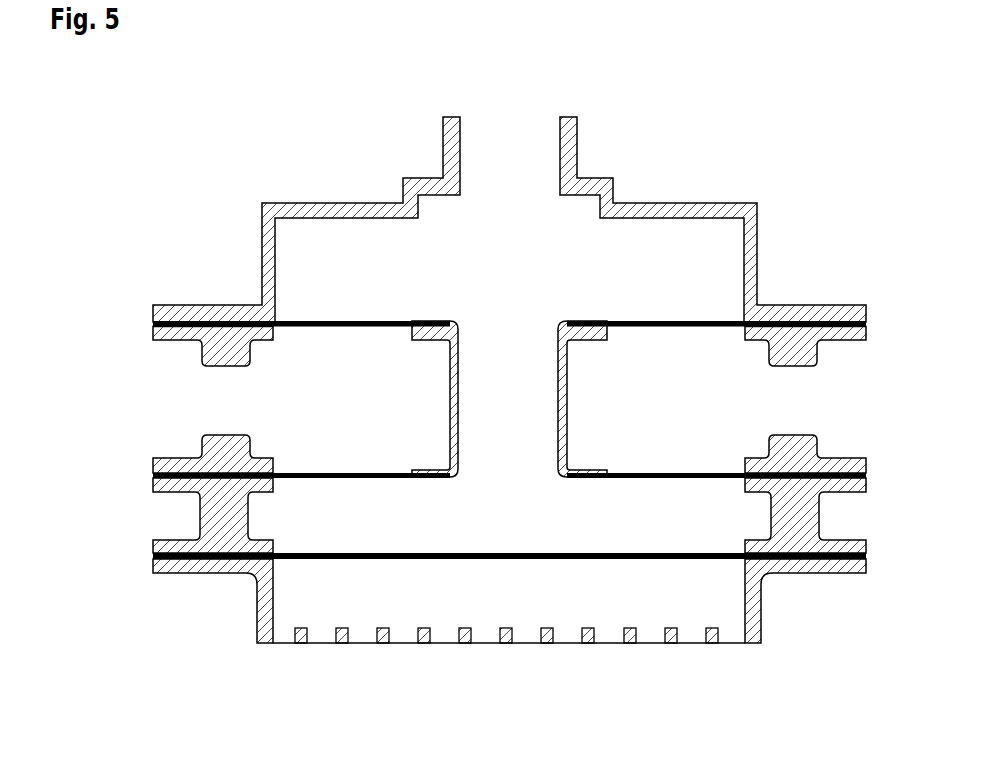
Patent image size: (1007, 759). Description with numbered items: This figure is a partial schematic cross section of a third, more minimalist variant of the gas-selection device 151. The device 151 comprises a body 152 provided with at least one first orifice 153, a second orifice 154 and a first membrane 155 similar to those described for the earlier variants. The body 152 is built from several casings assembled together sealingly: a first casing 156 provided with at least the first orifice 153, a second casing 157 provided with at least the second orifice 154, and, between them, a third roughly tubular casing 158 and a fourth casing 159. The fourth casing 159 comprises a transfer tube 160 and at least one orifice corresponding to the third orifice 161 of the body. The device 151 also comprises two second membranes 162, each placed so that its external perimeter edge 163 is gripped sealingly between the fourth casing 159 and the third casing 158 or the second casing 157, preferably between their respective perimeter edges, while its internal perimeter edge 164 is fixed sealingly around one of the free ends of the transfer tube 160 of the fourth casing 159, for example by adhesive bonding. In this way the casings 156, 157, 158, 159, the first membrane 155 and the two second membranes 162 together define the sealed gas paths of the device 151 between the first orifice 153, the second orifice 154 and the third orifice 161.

The gas-selection device 151 is at (190, 172).
The body 152 is at (88, 163).
The first orifice 153 is at (342, 600).
The second orifice 154 is at (508, 167).
The first membrane 155 is at (305, 558).
The first casing 156 is at (157, 567).
The second casing 157 is at (153, 308).
The third casing 158 is at (157, 483).
The fourth casing 159 is at (153, 333).
The transfer tube 160 is at (565, 368).
The third orifice 161 is at (194, 409).
The second membrane 162 is at (378, 327).
The external perimeter edge 163 is at (867, 325).
The internal perimeter edge 164 is at (587, 322).